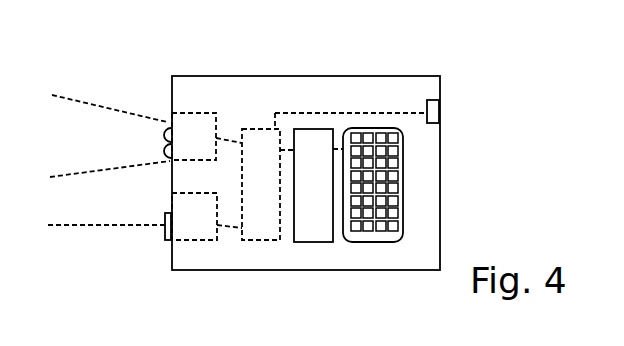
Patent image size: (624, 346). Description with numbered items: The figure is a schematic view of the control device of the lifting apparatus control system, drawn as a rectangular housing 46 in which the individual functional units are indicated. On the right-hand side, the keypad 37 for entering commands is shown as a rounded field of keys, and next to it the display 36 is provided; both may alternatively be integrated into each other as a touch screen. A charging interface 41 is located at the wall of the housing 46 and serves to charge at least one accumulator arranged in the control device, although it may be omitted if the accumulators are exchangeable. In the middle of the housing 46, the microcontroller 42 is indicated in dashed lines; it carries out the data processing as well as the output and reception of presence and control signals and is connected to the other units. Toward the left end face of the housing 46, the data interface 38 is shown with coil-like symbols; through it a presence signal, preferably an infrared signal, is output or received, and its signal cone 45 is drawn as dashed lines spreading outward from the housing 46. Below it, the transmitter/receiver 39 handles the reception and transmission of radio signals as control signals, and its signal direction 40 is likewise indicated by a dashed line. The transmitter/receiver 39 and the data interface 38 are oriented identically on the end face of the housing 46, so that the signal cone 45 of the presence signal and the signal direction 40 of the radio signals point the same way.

The display 36 is at (315, 140).
The keypad 37 is at (403, 175).
The data interface 38 is at (164, 109).
The transmitter/receiver 39 is at (163, 243).
The signal direction 40 is at (70, 227).
The charging interface 41 is at (440, 112).
The microcontroller 42 is at (265, 241).
The signal cone 45 is at (70, 99).
The housing 46 is at (384, 76).